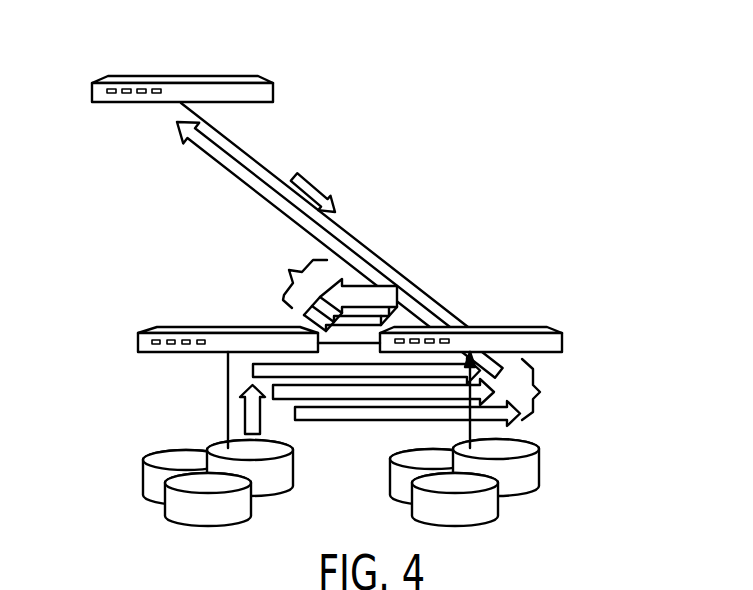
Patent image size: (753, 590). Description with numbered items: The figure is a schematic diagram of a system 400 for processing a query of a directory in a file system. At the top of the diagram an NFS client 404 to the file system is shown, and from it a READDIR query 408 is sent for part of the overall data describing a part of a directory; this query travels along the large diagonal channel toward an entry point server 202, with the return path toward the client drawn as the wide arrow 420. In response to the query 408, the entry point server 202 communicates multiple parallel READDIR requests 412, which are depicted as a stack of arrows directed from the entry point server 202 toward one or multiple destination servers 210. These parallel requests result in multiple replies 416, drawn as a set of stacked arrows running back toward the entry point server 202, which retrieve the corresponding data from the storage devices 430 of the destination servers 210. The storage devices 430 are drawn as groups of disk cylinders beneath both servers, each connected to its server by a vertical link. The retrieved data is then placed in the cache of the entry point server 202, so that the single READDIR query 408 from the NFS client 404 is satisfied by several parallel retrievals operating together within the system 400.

The system 400 is at (562, 94).
The NFS client 404 is at (182, 76).
The NFS response arrow 420 is at (213, 158).
The READDIR query 408 is at (338, 206).
The parallel READDIR requests 412 is at (287, 266).
The entry point server 202 is at (512, 327).
The destination servers 210 is at (232, 328).
The replies 416 is at (421, 392).
The storage devices 430 is at (338, 482).